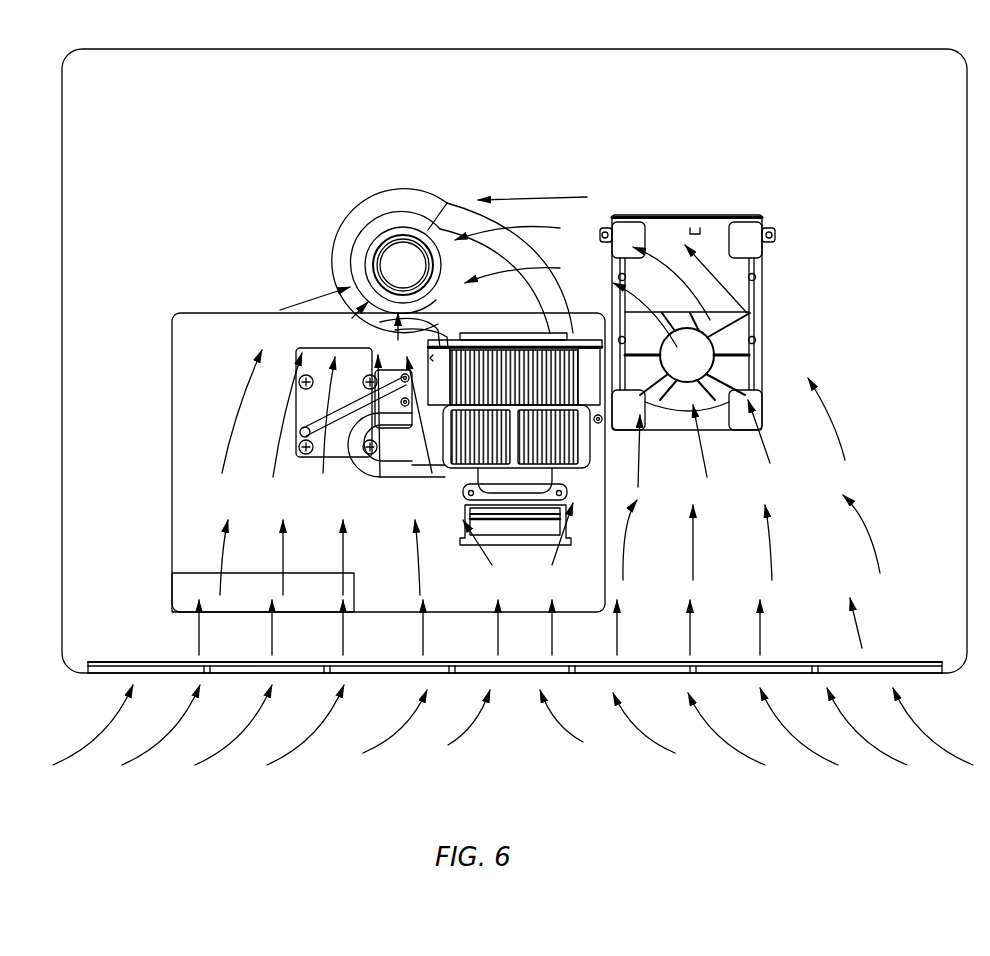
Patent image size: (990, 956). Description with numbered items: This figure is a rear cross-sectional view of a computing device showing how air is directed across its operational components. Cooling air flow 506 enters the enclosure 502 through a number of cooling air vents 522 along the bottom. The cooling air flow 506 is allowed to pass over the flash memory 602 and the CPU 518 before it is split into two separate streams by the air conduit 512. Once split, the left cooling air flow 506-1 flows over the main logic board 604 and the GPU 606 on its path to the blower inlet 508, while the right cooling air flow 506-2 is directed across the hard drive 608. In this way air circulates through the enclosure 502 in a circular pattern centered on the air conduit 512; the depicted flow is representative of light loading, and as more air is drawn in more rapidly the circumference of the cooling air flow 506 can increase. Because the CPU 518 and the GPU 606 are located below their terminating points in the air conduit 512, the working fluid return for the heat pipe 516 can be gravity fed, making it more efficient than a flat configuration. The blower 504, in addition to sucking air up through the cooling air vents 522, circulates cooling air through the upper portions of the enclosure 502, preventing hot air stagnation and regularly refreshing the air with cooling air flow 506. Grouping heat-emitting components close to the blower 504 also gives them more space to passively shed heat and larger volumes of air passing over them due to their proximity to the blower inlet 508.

The enclosure 502 is at (514, 361).
The blower 504 is at (365, 207).
The cooling air flow 506 is at (513, 481).
The left cooling air flow 506-1 is at (223, 411).
The right cooling air flow 506-2 is at (846, 419).
The blower inlet 508 is at (398, 237).
The air conduit 512 is at (577, 373).
The heat pipe 516 is at (368, 468).
The CPU 518 is at (568, 487).
The cooling air vents 522 is at (247, 670).
The flash memory 602 is at (567, 528).
The main logic board 604 is at (388, 462).
The GPU 606 is at (320, 348).
The hard drive 608 is at (712, 214).